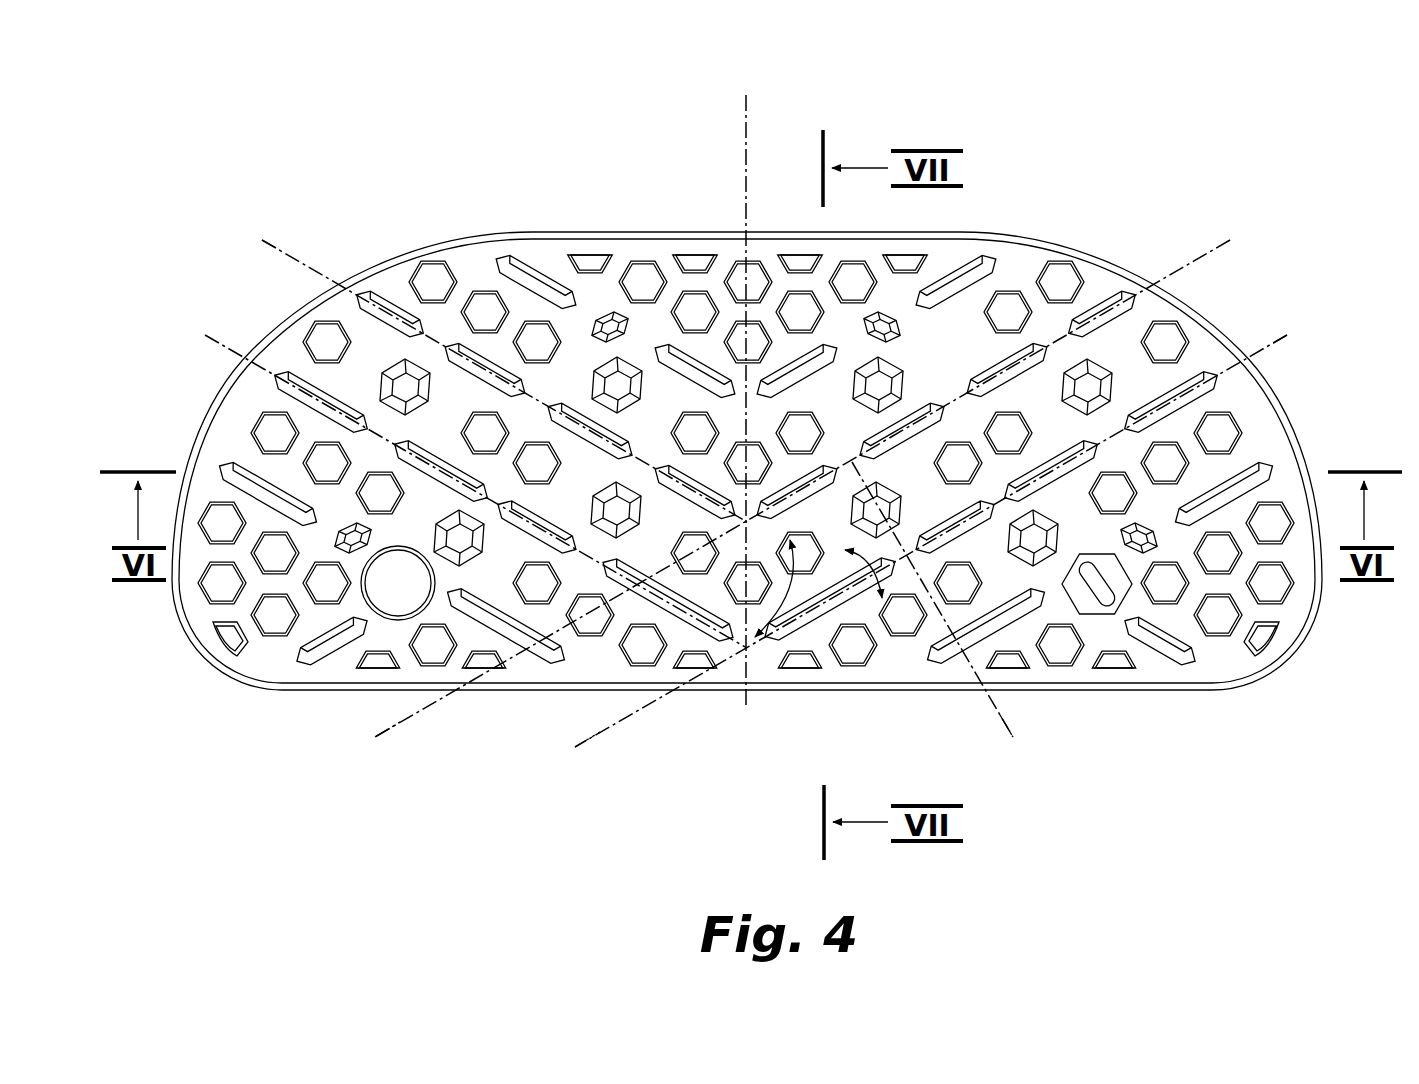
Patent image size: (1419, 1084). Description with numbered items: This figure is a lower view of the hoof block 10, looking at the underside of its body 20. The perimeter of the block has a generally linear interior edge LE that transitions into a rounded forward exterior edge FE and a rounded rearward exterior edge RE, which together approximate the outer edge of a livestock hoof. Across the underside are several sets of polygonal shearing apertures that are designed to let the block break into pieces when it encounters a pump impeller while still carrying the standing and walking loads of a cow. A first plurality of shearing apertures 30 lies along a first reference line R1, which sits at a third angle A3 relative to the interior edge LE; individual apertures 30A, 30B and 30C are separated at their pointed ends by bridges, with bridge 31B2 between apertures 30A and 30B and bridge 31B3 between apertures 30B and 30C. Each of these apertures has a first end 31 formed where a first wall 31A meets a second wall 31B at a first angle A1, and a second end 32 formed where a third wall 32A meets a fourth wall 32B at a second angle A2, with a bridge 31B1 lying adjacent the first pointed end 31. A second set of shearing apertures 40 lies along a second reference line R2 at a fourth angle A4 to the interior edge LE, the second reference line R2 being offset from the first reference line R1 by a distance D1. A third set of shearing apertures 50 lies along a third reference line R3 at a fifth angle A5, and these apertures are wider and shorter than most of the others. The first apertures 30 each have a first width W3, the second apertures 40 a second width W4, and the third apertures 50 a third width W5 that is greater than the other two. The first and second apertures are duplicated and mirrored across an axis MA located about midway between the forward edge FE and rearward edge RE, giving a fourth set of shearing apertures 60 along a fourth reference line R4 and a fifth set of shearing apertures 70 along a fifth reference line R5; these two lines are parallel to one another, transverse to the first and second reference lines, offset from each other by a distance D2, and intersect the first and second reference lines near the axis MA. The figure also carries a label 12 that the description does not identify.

The hoof block 10 is at (737, 424).
The inner peripheral edge 12 is at (1305, 650).
The body 20 is at (719, 459).
The first shearing apertures 30 is at (834, 622).
The aperture 30A is at (868, 600).
The aperture 30B is at (907, 547).
The aperture 30C is at (1070, 470).
The first end 31 is at (742, 662).
The first wall 31A is at (745, 632).
The second wall 31B is at (745, 660).
The bridge 31B1 is at (744, 660).
The bridge 31B2 is at (938, 543).
The bridge 31B3 is at (1187, 437).
The second end 32 is at (913, 560).
The third wall 32A is at (890, 560).
The fourth wall 32B is at (892, 562).
The second shearing apertures 40 is at (810, 470).
The third shearing apertures 50 is at (880, 378).
The fourth shearing apertures 60 is at (270, 367).
The fifth shearing apertures 70 is at (357, 293).
The axis MA is at (748, 122).
The first width W3 is at (1160, 395).
The second width W4 is at (1000, 358).
The third width W5 is at (897, 489).
The first reference line R1 is at (1298, 322).
The second reference line R2 is at (1240, 236).
The third reference line R3 is at (1018, 743).
The fourth reference line R4 is at (190, 322).
The fifth reference line R5 is at (243, 233).
The distance D1 is at (1283, 343).
The distance D2 is at (264, 236).
The first angle A1 is at (855, 516).
The second angle A2 is at (877, 640).
The third angle A3 is at (613, 728).
The fourth angle A4 is at (410, 726).
The fifth angle A5 is at (948, 694).
The forward exterior edge FE is at (175, 608).
The interior edge LE is at (1167, 690).
The rearward exterior edge RE is at (1273, 672).